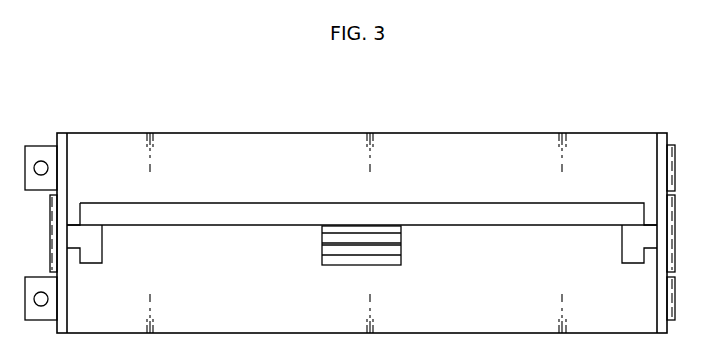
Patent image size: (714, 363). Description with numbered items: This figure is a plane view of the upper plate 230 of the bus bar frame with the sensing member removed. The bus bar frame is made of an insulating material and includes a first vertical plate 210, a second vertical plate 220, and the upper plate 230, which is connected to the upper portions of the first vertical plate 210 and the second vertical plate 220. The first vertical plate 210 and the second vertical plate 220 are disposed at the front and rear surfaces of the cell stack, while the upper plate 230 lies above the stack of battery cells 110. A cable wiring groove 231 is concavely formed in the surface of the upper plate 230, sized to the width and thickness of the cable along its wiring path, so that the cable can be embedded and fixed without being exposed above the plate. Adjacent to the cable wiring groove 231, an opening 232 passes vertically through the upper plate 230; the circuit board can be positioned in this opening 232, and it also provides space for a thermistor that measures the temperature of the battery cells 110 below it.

The battery cell 110 is at (348, 243).
The first vertical plate 210 is at (63, 140).
The second vertical plate 220 is at (661, 140).
The upper plate 230 is at (208, 140).
The cable wiring groove 231 is at (493, 214).
The opening 232 is at (390, 252).